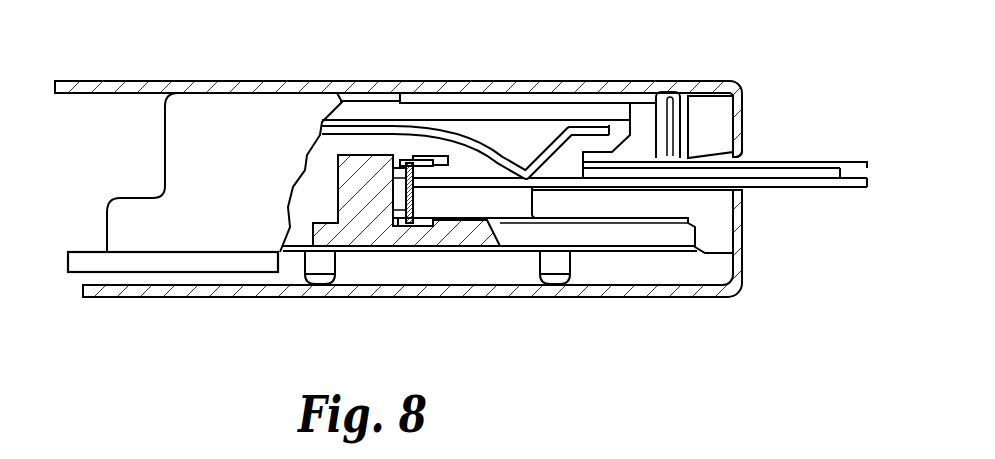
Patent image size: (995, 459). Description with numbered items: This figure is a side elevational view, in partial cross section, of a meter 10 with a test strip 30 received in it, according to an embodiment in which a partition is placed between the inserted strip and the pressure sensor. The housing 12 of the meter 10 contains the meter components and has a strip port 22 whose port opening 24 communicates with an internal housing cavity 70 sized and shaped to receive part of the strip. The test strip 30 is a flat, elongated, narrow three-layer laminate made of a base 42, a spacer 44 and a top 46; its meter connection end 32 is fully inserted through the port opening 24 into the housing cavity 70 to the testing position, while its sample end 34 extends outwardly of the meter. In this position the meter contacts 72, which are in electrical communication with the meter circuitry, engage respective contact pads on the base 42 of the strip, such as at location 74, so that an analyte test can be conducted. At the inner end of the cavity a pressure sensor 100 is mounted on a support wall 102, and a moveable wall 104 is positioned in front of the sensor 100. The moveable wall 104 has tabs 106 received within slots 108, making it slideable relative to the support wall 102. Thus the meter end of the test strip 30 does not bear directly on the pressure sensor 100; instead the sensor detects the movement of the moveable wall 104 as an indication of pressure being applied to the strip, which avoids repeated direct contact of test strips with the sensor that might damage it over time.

The meter 10 is at (583, 344).
The housing 12 is at (226, 80).
The strip port 22 is at (712, 110).
The port opening 24 is at (743, 157).
The test strip 30 is at (801, 161).
The meter connection end 32 is at (452, 189).
The sample end 34 is at (845, 194).
The base 42 is at (770, 190).
The spacer 44 is at (782, 175).
The top 46 is at (645, 162).
The housing cavity 70 is at (490, 135).
The meter contacts 72 is at (563, 137).
The contact location 74 is at (520, 191).
The pressure sensor 100 is at (394, 196).
The support wall 102 is at (355, 180).
The moveable wall 104 is at (450, 156).
The tabs 106 is at (410, 226).
The slots 108 is at (412, 160).